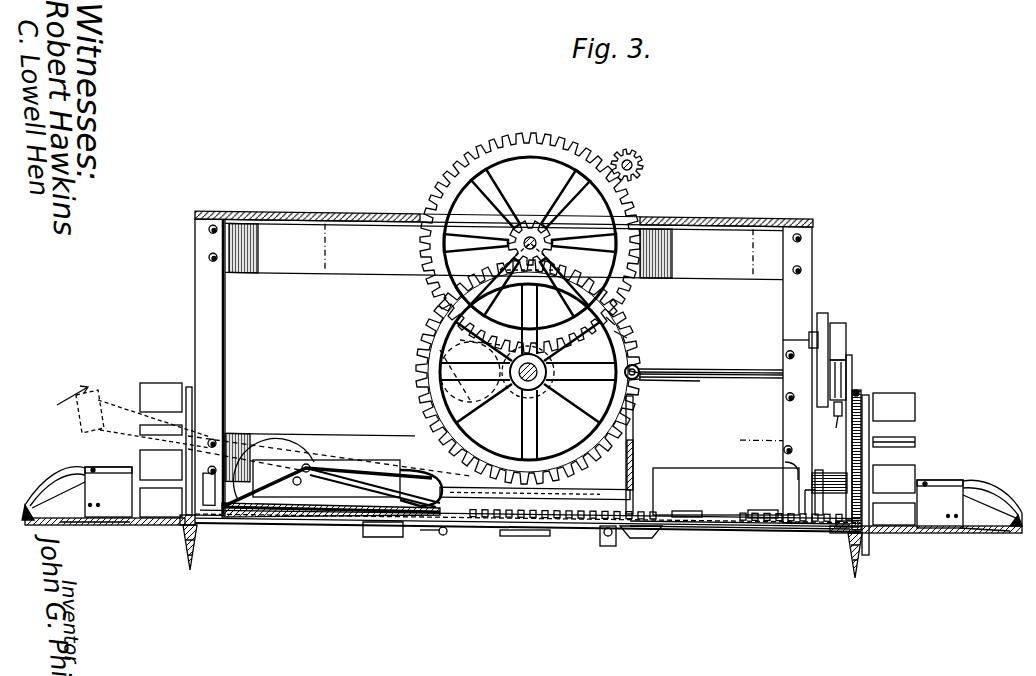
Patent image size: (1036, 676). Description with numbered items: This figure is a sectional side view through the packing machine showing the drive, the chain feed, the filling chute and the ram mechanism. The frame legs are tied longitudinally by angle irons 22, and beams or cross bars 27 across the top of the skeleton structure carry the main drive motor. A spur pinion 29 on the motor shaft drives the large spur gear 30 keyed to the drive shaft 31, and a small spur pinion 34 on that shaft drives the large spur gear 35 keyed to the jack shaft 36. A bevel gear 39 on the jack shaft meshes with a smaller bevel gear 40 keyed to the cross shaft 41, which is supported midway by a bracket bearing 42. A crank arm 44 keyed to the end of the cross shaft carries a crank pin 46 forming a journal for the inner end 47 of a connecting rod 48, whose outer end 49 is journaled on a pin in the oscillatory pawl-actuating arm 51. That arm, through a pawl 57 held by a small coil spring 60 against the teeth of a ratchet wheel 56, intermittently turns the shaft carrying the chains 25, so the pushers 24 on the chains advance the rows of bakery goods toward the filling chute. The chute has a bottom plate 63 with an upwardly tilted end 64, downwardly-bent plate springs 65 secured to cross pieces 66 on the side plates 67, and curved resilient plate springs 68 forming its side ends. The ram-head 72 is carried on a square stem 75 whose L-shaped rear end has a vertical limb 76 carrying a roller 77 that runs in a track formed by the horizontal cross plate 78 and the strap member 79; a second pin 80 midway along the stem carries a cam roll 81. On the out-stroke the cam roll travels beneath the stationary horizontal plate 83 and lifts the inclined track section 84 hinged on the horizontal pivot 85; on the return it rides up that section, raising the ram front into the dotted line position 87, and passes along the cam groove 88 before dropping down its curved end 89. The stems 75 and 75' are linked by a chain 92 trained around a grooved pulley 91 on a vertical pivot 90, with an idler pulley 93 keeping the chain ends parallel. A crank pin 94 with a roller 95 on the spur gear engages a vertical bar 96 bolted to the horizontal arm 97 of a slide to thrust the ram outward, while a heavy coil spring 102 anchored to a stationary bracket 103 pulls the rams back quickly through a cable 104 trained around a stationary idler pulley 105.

The angle irons 22 is at (855, 572).
The fingers or pushers 24 is at (905, 394).
The chains 25 is at (850, 542).
The beams or cross bars 27 is at (733, 228).
The spur pinion 29 is at (643, 166).
The large spur gear 30 is at (636, 204).
The drive shaft 31 is at (547, 235).
The small spur pinion 34 is at (530, 230).
The large spur gear 35 is at (638, 338).
The jack shaft 36 is at (540, 366).
The bevel gear 39 is at (545, 424).
The smaller bevel gear 40 is at (422, 316).
The cross shaft 41 is at (706, 378).
The bracket bearing 42 is at (438, 389).
The crank arm 44 is at (826, 314).
The crank pin 46 is at (800, 338).
The inner end of connecting rod 47 is at (842, 330).
The connecting rod 48 is at (853, 366).
The outer end of connecting rod 49 is at (836, 418).
The oscillatory pawl-actuating arm 51 is at (845, 365).
The ratchet wheel 56 is at (912, 440).
The pawl 57 is at (868, 400).
The small coil spring 60 is at (857, 395).
The bottom plate 63 is at (946, 533).
The upwardly tilted outer end 64 is at (998, 533).
The downwardly-bent plate springs 65 is at (988, 485).
The cross pieces 66 is at (926, 482).
The side plates 67 is at (947, 488).
The curved resilient plate springs 68 is at (1003, 503).
The ram-head 72 is at (845, 528).
The square stem 75 is at (527, 528).
The ram stem 75' is at (726, 480).
The vertical limb 76 is at (610, 548).
The roller 77 is at (625, 534).
The horizontal cross plate 78 is at (330, 520).
The strap member 79 is at (540, 538).
The second pin 80 is at (455, 530).
The cam roll 81 is at (428, 532).
The stationary horizontal plate 83 is at (316, 518).
The inclined track section 84 is at (260, 458).
The horizontal pivot 85 is at (295, 486).
The dotted line position 87 is at (92, 392).
The cam groove 88 is at (370, 460).
The curved end 89 is at (434, 480).
The vertical pivot 90 is at (805, 527).
The grooved pulley 91 is at (762, 510).
The chain 92 is at (576, 517).
The idler pulley 93 is at (682, 511).
The crank pin 94 is at (637, 368).
The roller 95 is at (655, 378).
The vertical bar 96 is at (636, 480).
The horizontal arm 97 is at (634, 462).
The heavy coil spring 102 is at (786, 463).
The stationary bracket 103 is at (820, 475).
The cable 104 is at (308, 460).
The stationary idler pulley 105 is at (278, 445).